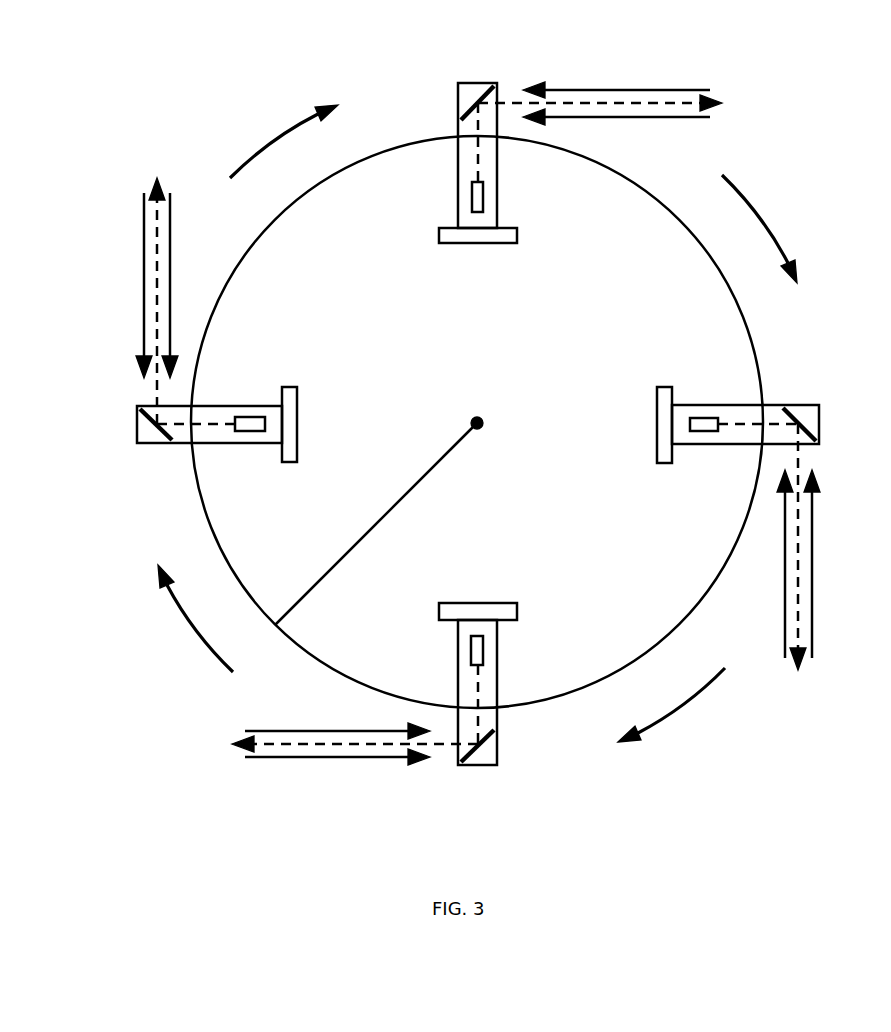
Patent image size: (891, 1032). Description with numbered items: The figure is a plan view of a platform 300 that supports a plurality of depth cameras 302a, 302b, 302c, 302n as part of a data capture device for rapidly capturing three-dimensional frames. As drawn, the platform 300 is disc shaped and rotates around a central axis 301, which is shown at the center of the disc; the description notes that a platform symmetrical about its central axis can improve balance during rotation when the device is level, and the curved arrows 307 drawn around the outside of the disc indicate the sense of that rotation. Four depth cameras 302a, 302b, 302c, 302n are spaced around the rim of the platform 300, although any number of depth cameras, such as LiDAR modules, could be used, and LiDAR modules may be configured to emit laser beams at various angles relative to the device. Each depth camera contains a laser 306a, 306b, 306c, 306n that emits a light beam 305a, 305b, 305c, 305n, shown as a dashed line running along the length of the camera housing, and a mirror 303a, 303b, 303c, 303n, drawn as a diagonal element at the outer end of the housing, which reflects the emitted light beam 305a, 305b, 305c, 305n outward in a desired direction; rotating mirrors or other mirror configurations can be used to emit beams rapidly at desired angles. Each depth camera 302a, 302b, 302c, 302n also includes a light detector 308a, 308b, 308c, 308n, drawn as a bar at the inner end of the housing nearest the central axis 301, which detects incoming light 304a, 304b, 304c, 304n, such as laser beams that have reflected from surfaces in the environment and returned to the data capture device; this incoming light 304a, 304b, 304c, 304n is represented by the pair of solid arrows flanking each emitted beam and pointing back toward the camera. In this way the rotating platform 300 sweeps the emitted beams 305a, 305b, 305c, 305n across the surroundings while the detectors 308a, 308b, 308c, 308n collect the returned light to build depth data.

The platform 300 is at (195, 114).
The central axis 301 is at (483, 428).
The depth camera 302a is at (137, 416).
The depth camera 302b is at (460, 83).
The depth camera 302c is at (800, 405).
The depth camera 302n is at (485, 765).
The mirror 303a is at (152, 430).
The mirror 303b is at (470, 96).
The mirror 303c is at (805, 413).
The mirror 303n is at (492, 748).
The incoming light 304a is at (144, 272).
The incoming light 304b is at (608, 90).
The incoming light 304c is at (785, 543).
The incoming light 304n is at (303, 731).
The light beam 305a is at (160, 228).
The light beam 305b is at (682, 100).
The light beam 305c is at (800, 510).
The light beam 305n is at (380, 744).
The laser 306a is at (250, 417).
The laser 306b is at (483, 192).
The laser 306c is at (702, 418).
The laser 306n is at (483, 653).
The rotation direction 307 is at (272, 135).
The light detector 308a is at (297, 405).
The light detector 308b is at (478, 243).
The light detector 308c is at (657, 405).
The light detector 308n is at (457, 603).